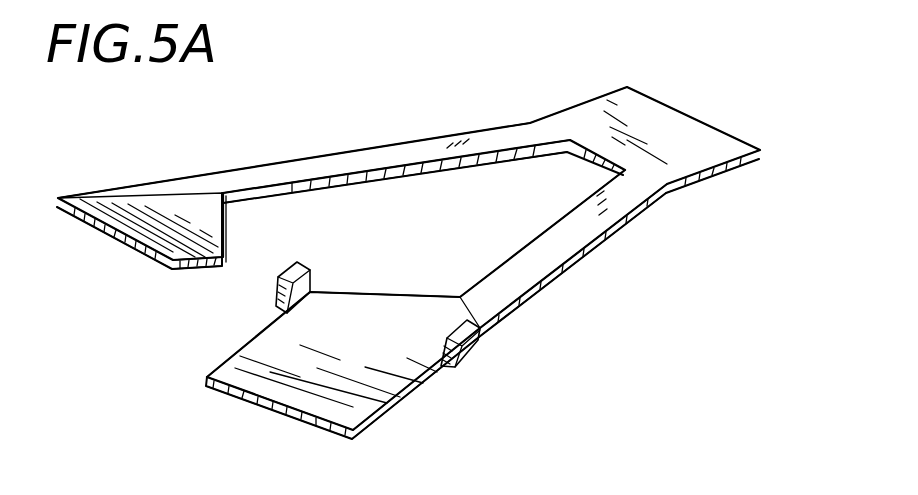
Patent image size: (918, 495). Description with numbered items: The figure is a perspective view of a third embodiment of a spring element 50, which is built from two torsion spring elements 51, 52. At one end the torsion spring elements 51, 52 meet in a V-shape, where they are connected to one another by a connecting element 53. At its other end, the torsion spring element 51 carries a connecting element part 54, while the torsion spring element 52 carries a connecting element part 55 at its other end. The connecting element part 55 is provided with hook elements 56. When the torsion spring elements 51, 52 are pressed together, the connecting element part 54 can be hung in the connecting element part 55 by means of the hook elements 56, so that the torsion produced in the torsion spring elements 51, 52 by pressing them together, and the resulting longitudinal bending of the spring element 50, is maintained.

The spring element 50 is at (412, 101).
The torsion spring element 51 is at (297, 168).
The torsion spring element 52 is at (538, 263).
The connecting element 53 is at (655, 123).
The connecting element part 54 is at (150, 200).
The connecting element part 55 is at (267, 367).
The hook elements 56 is at (463, 322).